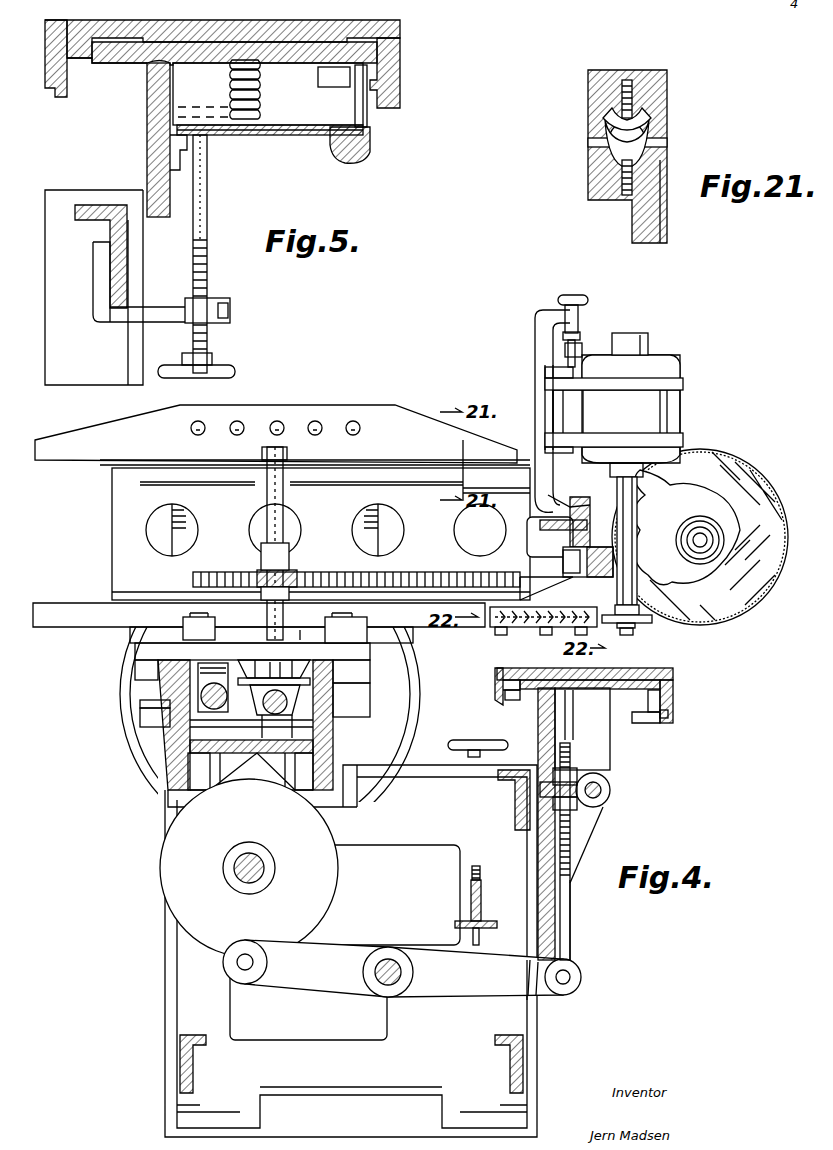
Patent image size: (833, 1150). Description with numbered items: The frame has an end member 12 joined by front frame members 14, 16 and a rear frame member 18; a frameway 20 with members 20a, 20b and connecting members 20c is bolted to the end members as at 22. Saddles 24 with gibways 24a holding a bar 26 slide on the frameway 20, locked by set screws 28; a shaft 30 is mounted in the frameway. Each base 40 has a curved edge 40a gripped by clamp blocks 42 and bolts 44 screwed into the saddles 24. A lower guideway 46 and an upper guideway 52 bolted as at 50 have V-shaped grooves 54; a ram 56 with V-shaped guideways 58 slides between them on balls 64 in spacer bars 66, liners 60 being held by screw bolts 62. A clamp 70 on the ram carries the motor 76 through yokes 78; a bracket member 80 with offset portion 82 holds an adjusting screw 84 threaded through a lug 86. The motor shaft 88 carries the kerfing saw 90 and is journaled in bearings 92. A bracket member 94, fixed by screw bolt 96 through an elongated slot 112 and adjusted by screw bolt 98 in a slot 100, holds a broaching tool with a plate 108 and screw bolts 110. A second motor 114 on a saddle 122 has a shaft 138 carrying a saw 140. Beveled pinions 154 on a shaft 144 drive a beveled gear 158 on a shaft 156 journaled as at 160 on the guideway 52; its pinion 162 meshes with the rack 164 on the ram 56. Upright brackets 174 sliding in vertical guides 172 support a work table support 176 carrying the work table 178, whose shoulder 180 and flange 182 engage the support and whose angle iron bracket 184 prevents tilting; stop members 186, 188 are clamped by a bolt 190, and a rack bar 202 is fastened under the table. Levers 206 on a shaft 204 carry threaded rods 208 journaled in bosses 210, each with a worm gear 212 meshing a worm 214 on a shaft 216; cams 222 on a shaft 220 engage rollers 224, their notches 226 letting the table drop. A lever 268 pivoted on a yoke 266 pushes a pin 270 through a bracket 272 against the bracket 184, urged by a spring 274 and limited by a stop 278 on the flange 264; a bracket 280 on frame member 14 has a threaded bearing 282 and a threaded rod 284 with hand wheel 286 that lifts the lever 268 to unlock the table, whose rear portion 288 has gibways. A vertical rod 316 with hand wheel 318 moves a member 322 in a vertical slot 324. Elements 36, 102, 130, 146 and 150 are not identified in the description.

In FIG. 5, the end member 12 is at (94, 287).
In FIG. 4, the end member 12 is at (351, 951).
In FIG. 5, the upper horizontal frame member 14 is at (108, 225).
In FIG. 4, the upper horizontal frame member 14 is at (515, 800).
In FIG. 4, the lower horizontal frame member 16 is at (500, 1060).
In FIG. 4, the horizontal frame member 18 is at (193, 1065).
In FIG. 4, the frameway 20 is at (333, 737).
In FIG. 4, the laterally extending member 20a is at (168, 728).
In FIG. 4, the laterally extending member 20b is at (343, 795).
In FIG. 4, the connecting member 20c is at (275, 760).
In FIG. 4, the bolt 22 is at (255, 793).
In FIG. 4, the saddle 24 is at (252, 663).
In FIG. 4, the gibway 24a is at (355, 672).
In FIG. 4, the bar 26 is at (230, 700).
In FIG. 4, the set screw 28 is at (267, 708).
In FIG. 4, the rod or shaft 30 is at (251, 730).
In FIG. 4, the housing wall 36 is at (190, 660).
In FIG. 4, the base 40 is at (271, 636).
In FIG. 4, the curved edge 40a is at (304, 628).
In FIG. 4, the clamp block 42 is at (345, 630).
In FIG. 4, the bolt 44 is at (183, 622).
In FIG. 4, the lower guideway 46 is at (68, 617).
In FIG. 4, the bolt 50 is at (282, 423).
In FIG. 4, the upper guideway 52 is at (276, 434).
In FIG. 21, the V-shaped groove 54 is at (645, 128).
In FIG. 21, the ram 56 is at (630, 215).
In FIG. 4, the ram 56 is at (315, 520).
In FIG. 21, the V-shaped guideway 58 is at (650, 165).
In FIG. 21, the channel-shaped liner 60 is at (622, 120).
In FIG. 21, the screw bolt 62 is at (632, 92).
In FIG. 21, the ball 64 is at (603, 160).
In FIG. 21, the spacer bar 66 is at (660, 143).
In FIG. 4, the clamp 70 is at (588, 551).
In FIG. 4, the motor 76 is at (616, 405).
In FIG. 4, the yoke 78 is at (614, 410).
In FIG. 4, the bracket member 80 is at (533, 370).
In FIG. 4, the offset portion 82 is at (558, 302).
In FIG. 4, the adjusting screw 84 is at (580, 335).
In FIG. 4, the lug 86 is at (582, 350).
In FIG. 4, the shaft 88 is at (637, 487).
In FIG. 4, the kerfing saw 90 is at (633, 632).
In FIG. 4, the bearing 92 is at (640, 600).
In FIG. 4, the bracket member 94 is at (600, 615).
In FIG. 4, the screw bolt 96 is at (557, 537).
In FIG. 4, the screw bolt 98 is at (546, 588).
In FIG. 4, the slot 100 is at (592, 522).
In FIG. 4, the bolt 102 is at (500, 635).
In FIG. 4, the plate 108 is at (530, 627).
In FIG. 4, the screw bolt 110 is at (560, 645).
In FIG. 4, the elongated slot 112 is at (569, 494).
In FIG. 4, the motor 114 is at (687, 527).
In FIG. 4, the saddle 122 is at (700, 590).
In FIG. 4, the blade flange 130 is at (690, 562).
In FIG. 4, the shaft 138 is at (704, 534).
In FIG. 4, the saw 140 is at (753, 533).
In FIG. 4, the shaft 144 is at (285, 710).
In FIG. 4, the bevel gear 146 is at (260, 690).
In FIG. 4, the ring gear 150 is at (410, 725).
In FIG. 4, the beveled pinion 154 is at (313, 706).
In FIG. 4, the shaft 156 is at (283, 497).
In FIG. 4, the beveled gear 158 is at (320, 668).
In FIG. 4, the journal 160 is at (287, 452).
In FIG. 4, the pinion 162 is at (297, 577).
In FIG. 4, the rack 164 is at (400, 577).
In FIG. 4, the vertical guide 172 is at (537, 955).
In FIG. 4, the upright bracket 174 is at (567, 824).
In FIG. 5, the work table support 176 is at (277, 73).
In FIG. 4, the work table support 176 is at (610, 700).
In FIG. 5, the work table 178 is at (400, 33).
In FIG. 4, the work table 178 is at (612, 668).
In FIG. 5, the shoulder 180 is at (80, 62).
In FIG. 4, the shoulder 180 is at (486, 678).
In FIG. 5, the flange 182 is at (400, 72).
In FIG. 4, the flange 182 is at (673, 685).
In FIG. 5, the angle iron bracket 184 is at (377, 55).
In FIG. 4, the angle iron bracket 184 is at (650, 695).
In FIG. 4, the clamp member 186 is at (645, 723).
In FIG. 4, the clamp member 188 is at (660, 708).
In FIG. 4, the bolt 190 is at (668, 716).
In FIG. 4, the rack bar 202 is at (512, 700).
In FIG. 4, the shaft 204 is at (400, 972).
In FIG. 4, the lever 206 is at (413, 968).
In FIG. 4, the threaded rod 208 is at (570, 880).
In FIG. 4, the boss 210 is at (570, 845).
In FIG. 4, the worm gear 212 is at (577, 770).
In FIG. 4, the worm 214 is at (605, 783).
In FIG. 4, the shaft 216 is at (608, 800).
In FIG. 4, the shaft 220 is at (264, 868).
In FIG. 4, the cam 222 is at (249, 868).
In FIG. 4, the roller 224 is at (245, 984).
In FIG. 4, the notch 226 is at (258, 930).
In FIG. 5, the flange 264 is at (147, 135).
In FIG. 5, the yoke 266 is at (350, 107).
In FIG. 5, the lever 268 is at (285, 135).
In FIG. 5, the pin or rod 270 is at (370, 112).
In FIG. 5, the bracket 272 is at (334, 77).
In FIG. 5, the spring 274 is at (230, 88).
In FIG. 5, the stop 278 is at (207, 175).
In FIG. 5, the bracket 280 is at (150, 307).
In FIG. 5, the threaded bearing 282 is at (200, 303).
In FIG. 5, the threaded rod 284 is at (207, 258).
In FIG. 5, the hand wheel 286 is at (235, 365).
In FIG. 5, the portion 288 is at (50, 97).
In FIG. 4, the portion 288 is at (500, 688).
In FIG. 4, the vertical rod 316 is at (480, 872).
In FIG. 4, the hand wheel 318 is at (458, 752).
In FIG. 4, the member 322 is at (471, 905).
In FIG. 4, the vertical slot 324 is at (479, 940).